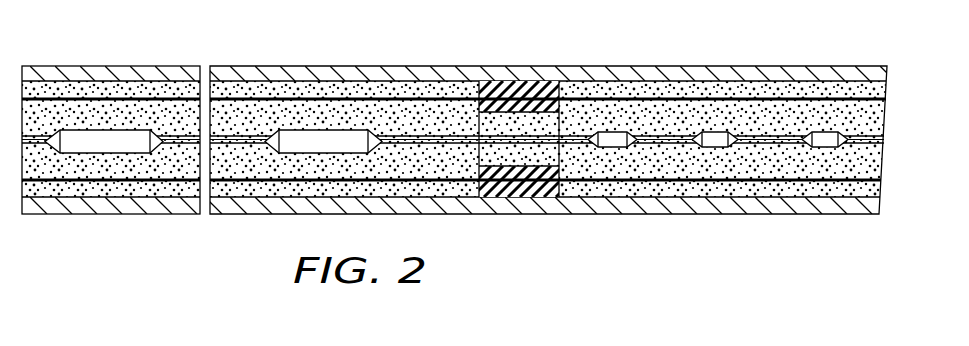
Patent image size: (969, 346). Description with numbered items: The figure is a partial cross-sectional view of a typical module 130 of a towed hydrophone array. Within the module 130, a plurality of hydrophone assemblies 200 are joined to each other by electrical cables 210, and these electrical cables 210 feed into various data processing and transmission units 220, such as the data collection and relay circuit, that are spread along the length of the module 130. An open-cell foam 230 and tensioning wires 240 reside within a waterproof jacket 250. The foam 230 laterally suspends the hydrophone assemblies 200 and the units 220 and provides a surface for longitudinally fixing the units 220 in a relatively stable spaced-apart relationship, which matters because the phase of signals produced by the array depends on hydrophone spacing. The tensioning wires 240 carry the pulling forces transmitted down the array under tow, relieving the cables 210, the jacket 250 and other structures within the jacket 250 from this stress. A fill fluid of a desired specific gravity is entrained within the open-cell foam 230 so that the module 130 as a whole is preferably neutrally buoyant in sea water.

The module 130 is at (529, 231).
The hydrophone assemblies 200 is at (607, 132).
The electrical cables 210 is at (663, 132).
The data processing and transmission units 220 is at (103, 130).
The open-cell foam 230 is at (127, 107).
The tensioning wires 240 is at (343, 99).
The waterproof jacket 250 is at (183, 67).